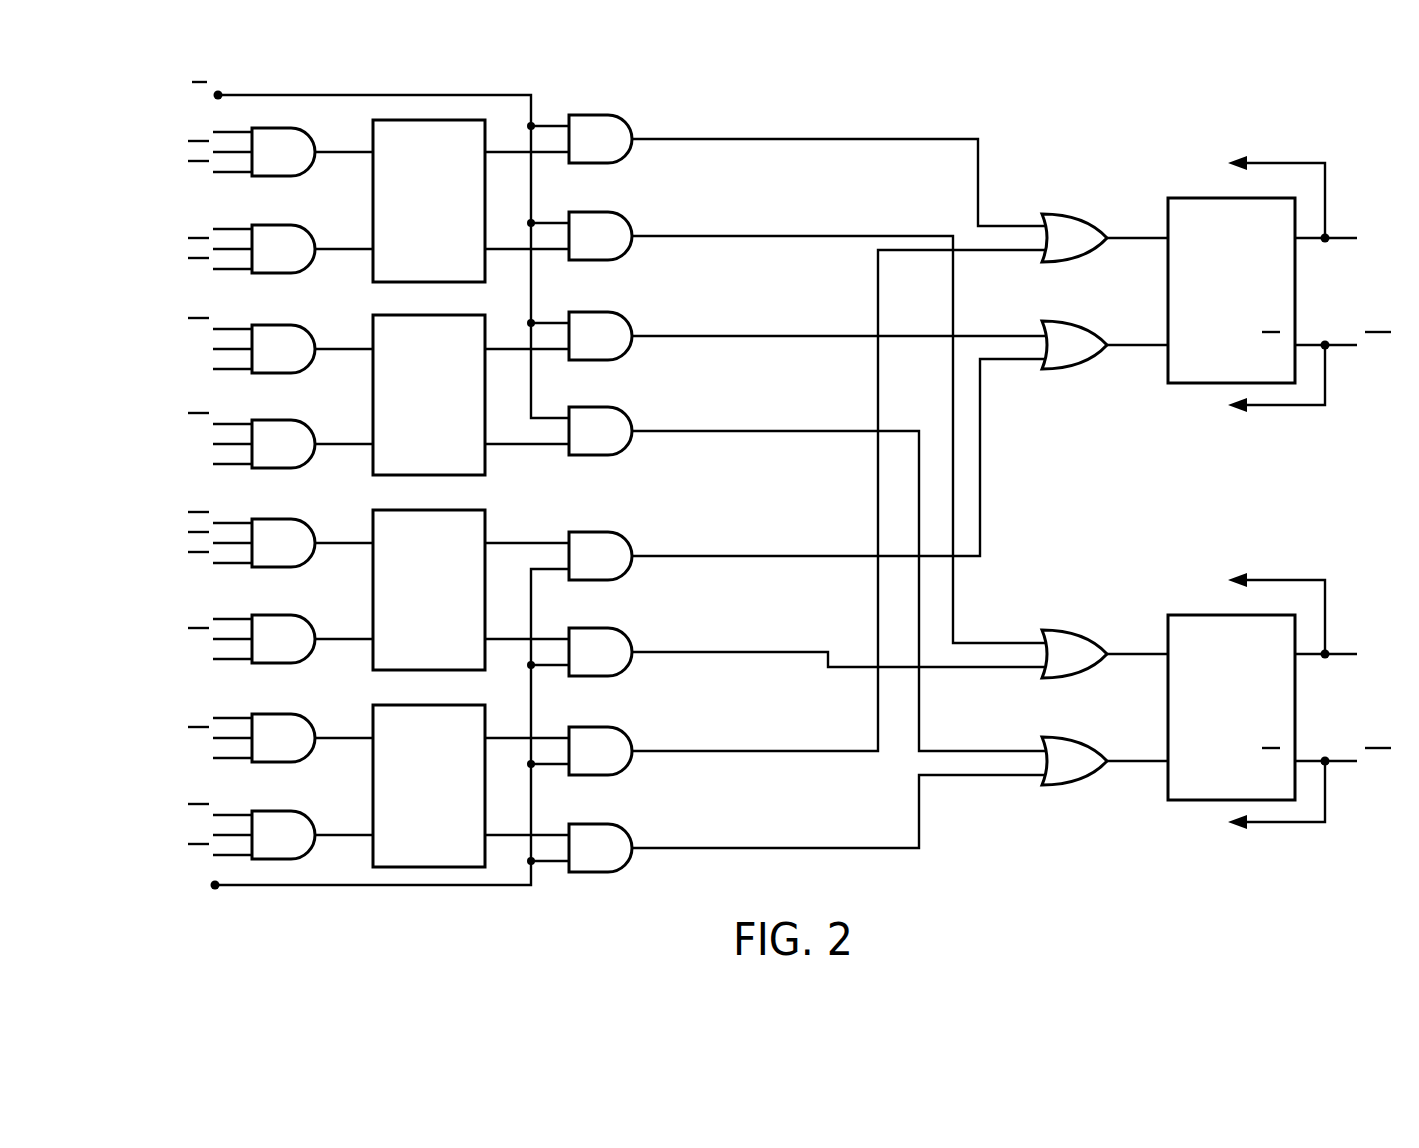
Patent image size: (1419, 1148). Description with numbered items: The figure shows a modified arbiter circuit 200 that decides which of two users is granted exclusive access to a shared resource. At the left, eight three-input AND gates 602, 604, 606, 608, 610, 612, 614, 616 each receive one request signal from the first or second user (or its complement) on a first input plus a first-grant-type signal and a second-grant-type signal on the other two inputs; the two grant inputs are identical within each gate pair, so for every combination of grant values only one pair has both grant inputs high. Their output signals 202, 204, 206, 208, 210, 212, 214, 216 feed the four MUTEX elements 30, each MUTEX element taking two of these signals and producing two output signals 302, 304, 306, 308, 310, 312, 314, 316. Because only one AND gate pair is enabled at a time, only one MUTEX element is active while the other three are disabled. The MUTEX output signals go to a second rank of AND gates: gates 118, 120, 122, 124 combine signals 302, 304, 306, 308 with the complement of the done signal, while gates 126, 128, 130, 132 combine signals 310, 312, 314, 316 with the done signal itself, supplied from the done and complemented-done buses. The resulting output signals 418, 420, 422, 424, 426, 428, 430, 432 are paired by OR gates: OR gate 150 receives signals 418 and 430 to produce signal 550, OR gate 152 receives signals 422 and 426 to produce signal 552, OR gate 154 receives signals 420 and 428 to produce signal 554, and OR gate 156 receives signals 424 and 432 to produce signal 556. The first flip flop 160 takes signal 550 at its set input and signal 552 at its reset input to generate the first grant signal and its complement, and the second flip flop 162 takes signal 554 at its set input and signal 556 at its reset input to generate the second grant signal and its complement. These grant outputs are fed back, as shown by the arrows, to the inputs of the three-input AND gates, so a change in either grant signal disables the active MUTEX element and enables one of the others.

The MUTEX element 30 is at (429, 493).
The AND gate 118 is at (581, 149).
The AND gate 120 is at (581, 246).
The AND gate 122 is at (581, 346).
The AND gate 124 is at (581, 441).
The AND gate 126 is at (581, 566).
The AND gate 128 is at (581, 662).
The AND gate 130 is at (581, 761).
The AND gate 132 is at (581, 858).
The OR gate 150 is at (1087, 248).
The OR gate 152 is at (1087, 355).
The OR gate 154 is at (1087, 664).
The OR gate 156 is at (1087, 771).
The first flip flop 160 is at (1190, 196).
The second flip flop 162 is at (1190, 613).
The arbiter circuit 200 is at (790, 517).
The output signal 202 is at (343, 148).
The output signal 204 is at (343, 245).
The output signal 206 is at (343, 345).
The output signal 208 is at (343, 440).
The output signal 210 is at (343, 539).
The output signal 212 is at (343, 635).
The output signal 214 is at (343, 734).
The output signal 216 is at (343, 831).
The MUTEX output signal 302 is at (505, 148).
The MUTEX output signal 304 is at (505, 245).
The MUTEX output signal 306 is at (505, 345).
The MUTEX output signal 308 is at (505, 440).
The MUTEX output signal 310 is at (505, 539).
The MUTEX output signal 312 is at (505, 635).
The MUTEX output signal 314 is at (505, 734).
The MUTEX output signal 316 is at (505, 831).
The output signal 418 is at (751, 135).
The output signal 420 is at (751, 232).
The output signal 422 is at (751, 332).
The output signal 424 is at (751, 427).
The output signal 426 is at (751, 552).
The output signal 428 is at (751, 648).
The output signal 430 is at (751, 747).
The output signal 432 is at (751, 844).
The output signal 550 is at (1138, 234).
The output signal 552 is at (1138, 341).
The output signal 554 is at (1138, 650).
The output signal 556 is at (1138, 757).
The three-input AND gate 602 is at (261, 162).
The three-input AND gate 604 is at (261, 259).
The three-input AND gate 606 is at (261, 359).
The three-input AND gate 608 is at (261, 454).
The three-input AND gate 610 is at (261, 553).
The three-input AND gate 612 is at (261, 649).
The three-input AND gate 614 is at (261, 748).
The three-input AND gate 616 is at (261, 845).